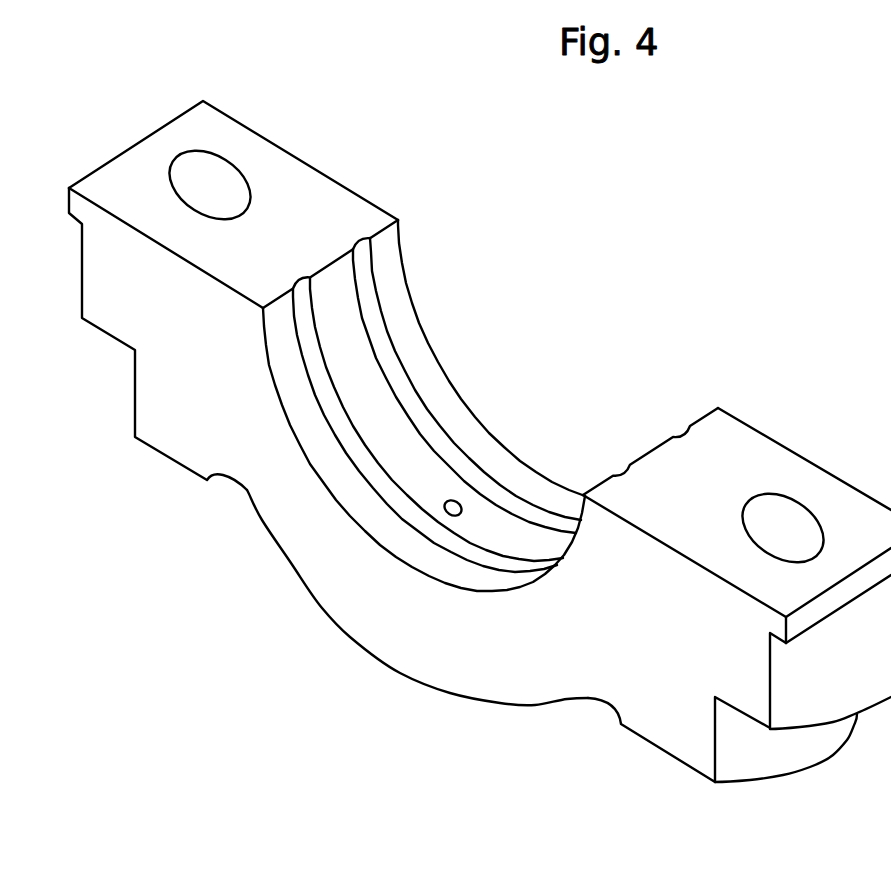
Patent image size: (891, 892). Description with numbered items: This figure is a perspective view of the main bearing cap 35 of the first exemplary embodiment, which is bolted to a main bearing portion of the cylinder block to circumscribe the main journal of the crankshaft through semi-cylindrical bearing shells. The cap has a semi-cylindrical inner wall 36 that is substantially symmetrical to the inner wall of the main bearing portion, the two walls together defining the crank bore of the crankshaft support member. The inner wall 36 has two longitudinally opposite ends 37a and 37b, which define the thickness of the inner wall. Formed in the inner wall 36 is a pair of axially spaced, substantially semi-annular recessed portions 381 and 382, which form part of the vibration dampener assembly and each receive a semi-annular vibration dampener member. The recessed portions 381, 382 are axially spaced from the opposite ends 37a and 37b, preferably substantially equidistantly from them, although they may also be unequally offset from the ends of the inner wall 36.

The main bearing cap 35 is at (263, 527).
The semi-cylindrical inner wall 36 is at (512, 530).
The longitudinally opposite end 37a is at (420, 292).
The longitudinally opposite end 37b is at (340, 505).
The semi-annular recessed portion 381 is at (413, 391).
The semi-annular recessed portion 382 is at (460, 562).